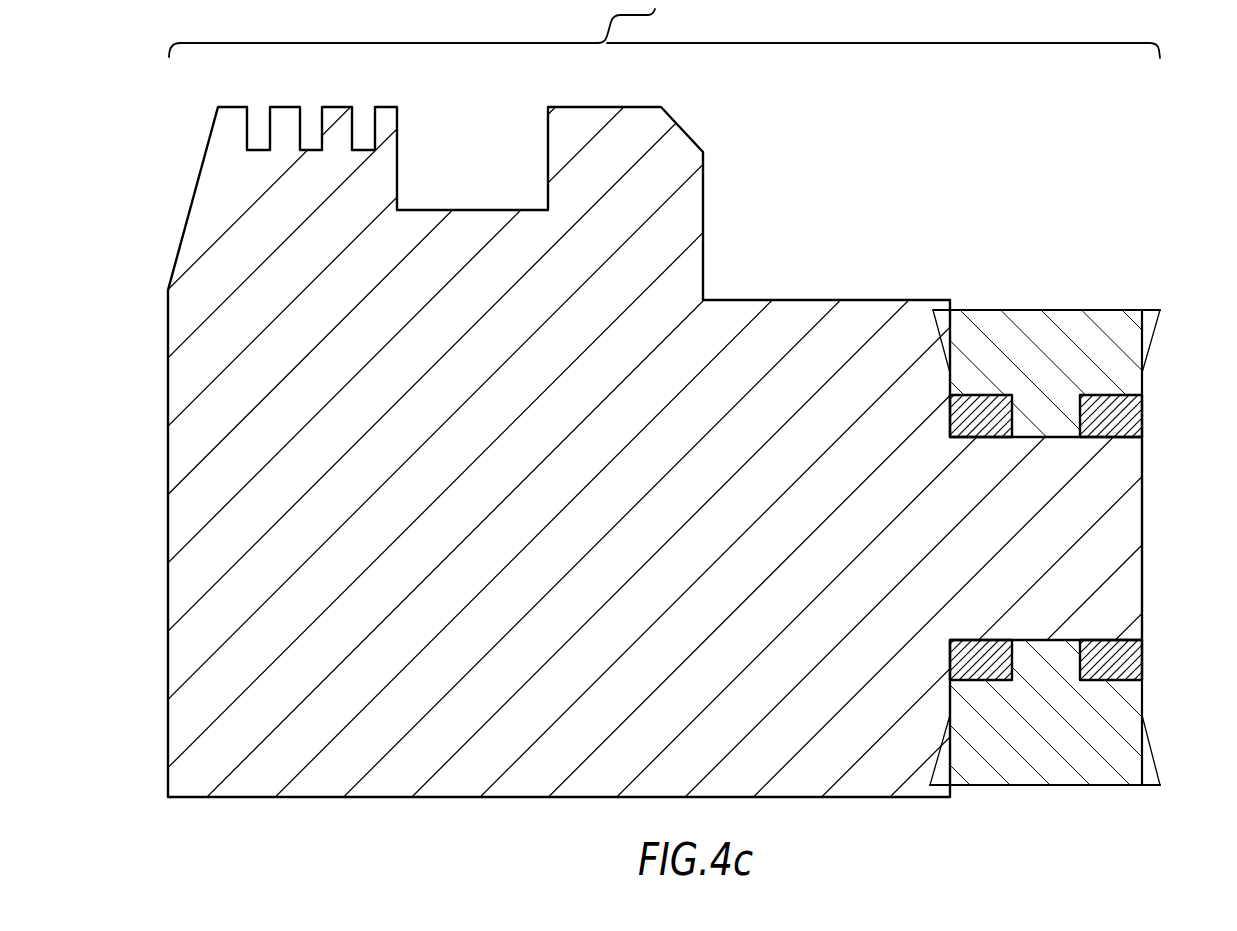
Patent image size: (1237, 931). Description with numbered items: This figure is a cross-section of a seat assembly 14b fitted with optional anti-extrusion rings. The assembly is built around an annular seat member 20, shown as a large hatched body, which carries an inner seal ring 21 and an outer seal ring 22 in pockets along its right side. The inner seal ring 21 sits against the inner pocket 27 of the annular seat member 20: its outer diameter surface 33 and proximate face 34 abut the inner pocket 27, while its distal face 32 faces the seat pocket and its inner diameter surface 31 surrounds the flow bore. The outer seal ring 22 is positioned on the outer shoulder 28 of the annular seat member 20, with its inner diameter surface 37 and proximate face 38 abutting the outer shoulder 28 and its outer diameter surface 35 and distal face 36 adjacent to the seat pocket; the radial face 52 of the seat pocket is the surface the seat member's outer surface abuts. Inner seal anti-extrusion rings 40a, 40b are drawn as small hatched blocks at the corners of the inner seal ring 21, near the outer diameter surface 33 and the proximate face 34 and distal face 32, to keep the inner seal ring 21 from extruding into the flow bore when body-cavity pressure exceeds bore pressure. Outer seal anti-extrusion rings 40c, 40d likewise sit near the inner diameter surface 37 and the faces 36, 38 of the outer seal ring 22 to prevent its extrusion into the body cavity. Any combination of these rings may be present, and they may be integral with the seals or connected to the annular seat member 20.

The seat assembly 14b is at (664, 29).
The annular seat member 20 is at (511, 465).
The inner seal ring 21 is at (1063, 731).
The outer seal ring 22 is at (1066, 365).
The inner pocket 27 is at (968, 639).
The outer shoulder 28 is at (955, 438).
The inner diameter surface 31 is at (1063, 786).
The distal face 32 is at (1150, 735).
The outer diameter surface 33 is at (1062, 639).
The proximate face 34 is at (945, 733).
The outer diameter surface 35 is at (1097, 308).
The distal face 36 is at (1153, 333).
The inner diameter surface 37 is at (1043, 438).
The proximate face 38 is at (940, 338).
The inner seal anti-extrusion ring 40a is at (949, 655).
The inner seal anti-extrusion ring 40b is at (1143, 655).
The outer seal anti-extrusion ring 40c is at (949, 407).
The outer seal anti-extrusion ring 40d is at (1143, 404).
The radial face 52 is at (1011, 395).